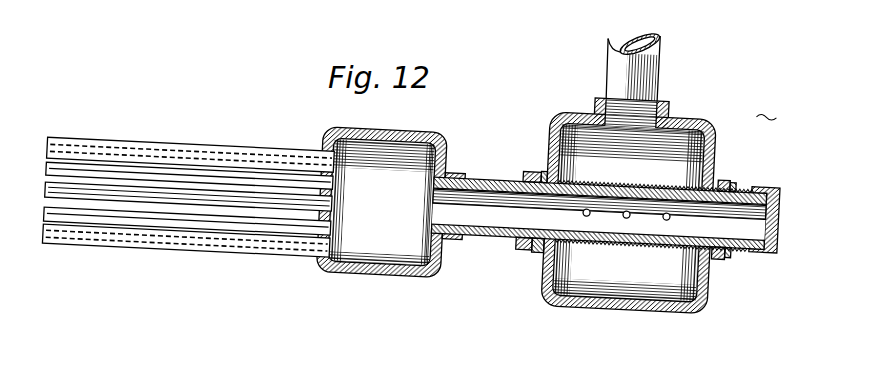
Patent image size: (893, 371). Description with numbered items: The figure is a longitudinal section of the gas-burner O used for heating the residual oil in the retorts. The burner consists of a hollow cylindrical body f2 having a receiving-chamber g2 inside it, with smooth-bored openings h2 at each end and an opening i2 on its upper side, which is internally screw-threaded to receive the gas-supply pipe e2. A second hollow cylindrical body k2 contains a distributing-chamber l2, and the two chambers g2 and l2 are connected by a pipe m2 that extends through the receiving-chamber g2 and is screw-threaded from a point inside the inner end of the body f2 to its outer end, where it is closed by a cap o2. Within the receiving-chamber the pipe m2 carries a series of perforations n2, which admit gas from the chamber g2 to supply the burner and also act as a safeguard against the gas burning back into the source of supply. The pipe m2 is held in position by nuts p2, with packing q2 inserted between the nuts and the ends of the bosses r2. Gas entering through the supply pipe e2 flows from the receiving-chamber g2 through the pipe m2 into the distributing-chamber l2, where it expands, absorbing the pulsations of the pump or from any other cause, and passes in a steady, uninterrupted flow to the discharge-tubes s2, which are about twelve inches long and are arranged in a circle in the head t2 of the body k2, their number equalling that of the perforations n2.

The discharge-tubes s2 is at (217, 151).
The head t2 is at (319, 250).
The distributing-chamber l2 is at (398, 245).
The hollow cylindrical body k2 is at (599, 196).
The gas-burner O is at (601, 165).
The pipe m2 is at (480, 232).
The nuts p2 is at (526, 173).
The packing q2 is at (538, 168).
The openings h2 is at (528, 246).
The bosses r2 is at (544, 248).
The perforations n2 is at (627, 209).
The hollow cylindrical body f2 is at (705, 123).
The receiving-chamber g2 is at (671, 278).
The opening i2 is at (655, 94).
The gas-supply pipe e2 is at (643, 64).
The cap o2 is at (779, 195).